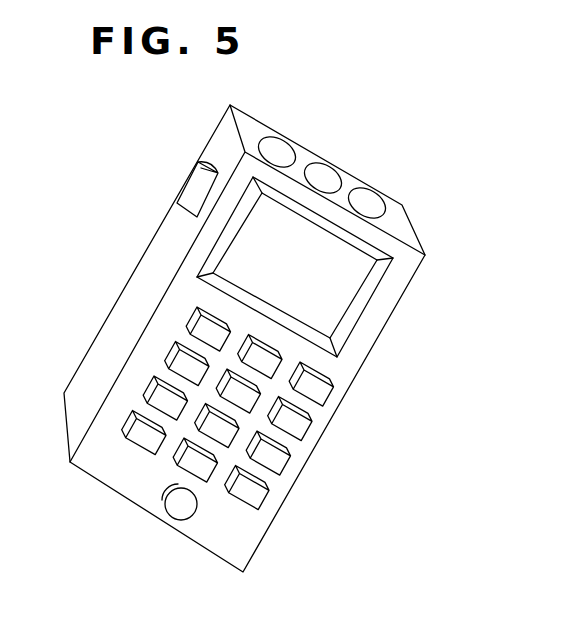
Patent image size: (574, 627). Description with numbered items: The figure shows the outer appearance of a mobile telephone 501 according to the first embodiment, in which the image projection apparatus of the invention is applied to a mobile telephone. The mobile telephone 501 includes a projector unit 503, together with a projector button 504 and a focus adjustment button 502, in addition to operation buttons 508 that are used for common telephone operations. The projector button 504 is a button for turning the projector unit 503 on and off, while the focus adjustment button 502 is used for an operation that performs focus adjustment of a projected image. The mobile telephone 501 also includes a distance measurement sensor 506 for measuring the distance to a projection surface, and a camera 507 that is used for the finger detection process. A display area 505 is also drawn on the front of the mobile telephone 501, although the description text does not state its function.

The mobile telephone 501 is at (95, 357).
The focus adjustment button 502 is at (192, 178).
The projector unit 503 is at (323, 161).
The projector button 504 is at (172, 508).
The display screen 505 is at (345, 298).
The distance measurement sensor 506 is at (272, 130).
The camera 507 is at (378, 186).
The operation buttons 508 is at (318, 397).